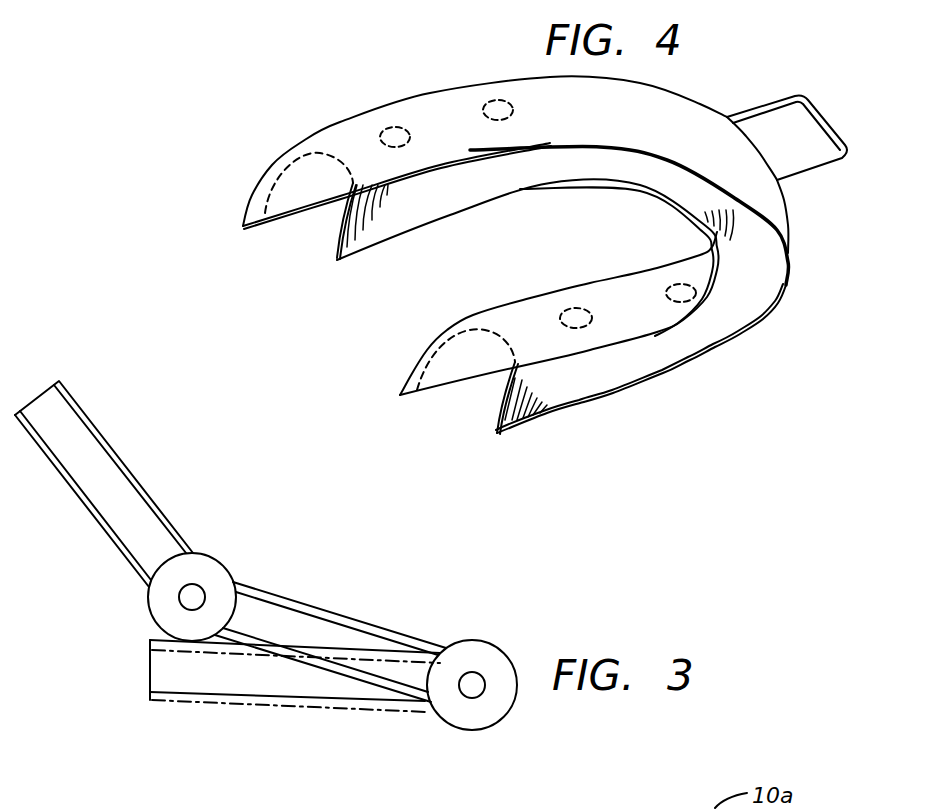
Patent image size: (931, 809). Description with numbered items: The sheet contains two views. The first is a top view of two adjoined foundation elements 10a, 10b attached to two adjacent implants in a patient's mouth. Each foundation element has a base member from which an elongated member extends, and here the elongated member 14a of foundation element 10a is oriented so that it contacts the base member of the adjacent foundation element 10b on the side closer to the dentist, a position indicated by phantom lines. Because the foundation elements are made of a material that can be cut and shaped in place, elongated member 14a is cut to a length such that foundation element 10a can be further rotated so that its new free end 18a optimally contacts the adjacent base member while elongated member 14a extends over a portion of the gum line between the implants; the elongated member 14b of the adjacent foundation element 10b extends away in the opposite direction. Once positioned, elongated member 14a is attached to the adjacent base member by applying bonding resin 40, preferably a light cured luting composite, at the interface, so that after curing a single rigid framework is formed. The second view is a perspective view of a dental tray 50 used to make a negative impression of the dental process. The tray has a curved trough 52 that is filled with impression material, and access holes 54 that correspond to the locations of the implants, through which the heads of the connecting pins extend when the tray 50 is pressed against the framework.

In FIG. 4, the dental tray 50 is at (396, 293).
In FIG. 4, the curved trough 52 is at (683, 195).
In FIG. 4, the access holes 54 is at (388, 127).
In FIG. 3, the foundation element 10a is at (319, 636).
In FIG. 3, the foundation element 10b is at (123, 462).
In FIG. 3, the elongated member 14a is at (362, 628).
In FIG. 3, the elongated member 14b is at (63, 466).
In FIG. 3, the free end 18a is at (313, 603).
In FIG. 3, the bonding resin 40 is at (238, 582).